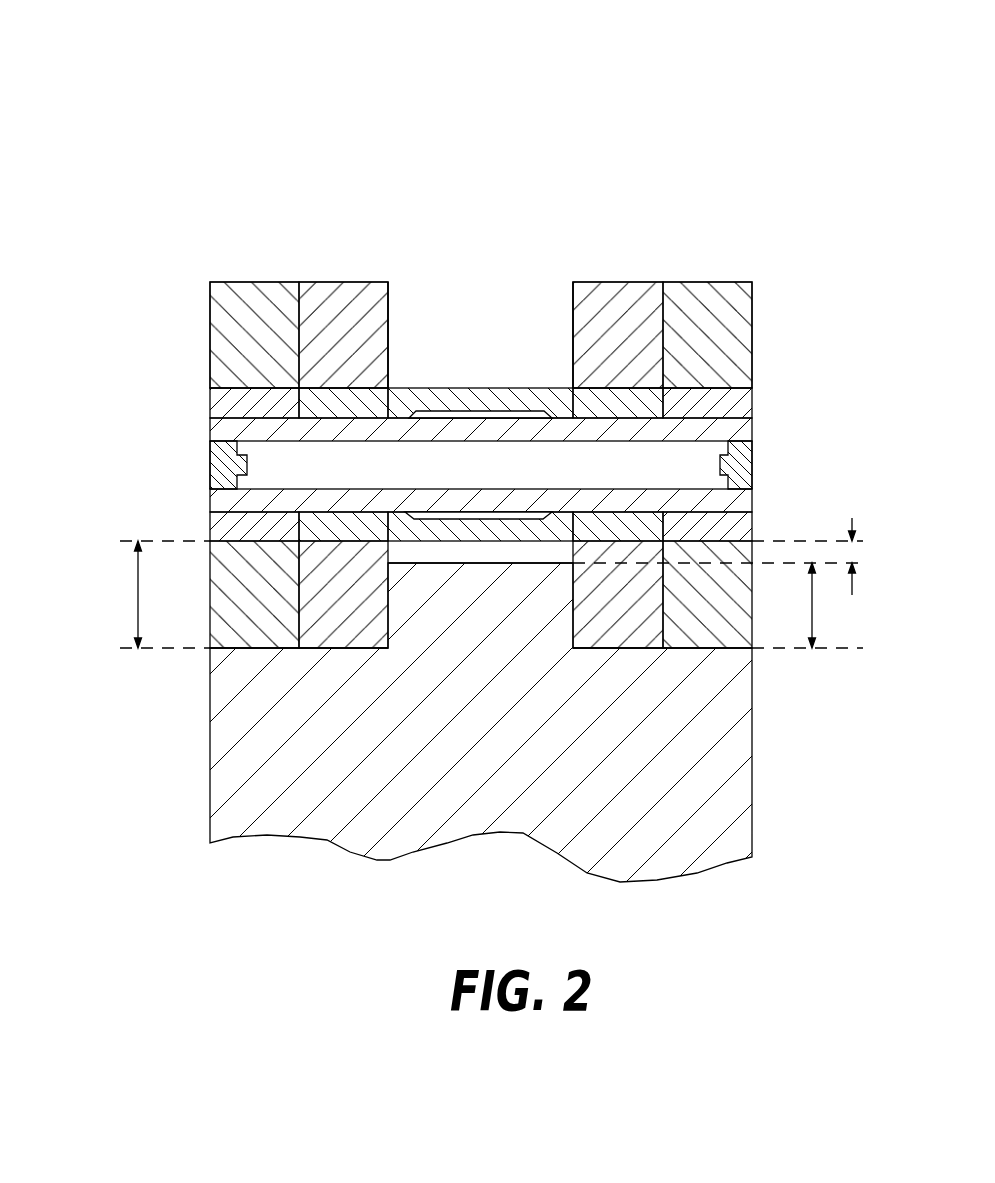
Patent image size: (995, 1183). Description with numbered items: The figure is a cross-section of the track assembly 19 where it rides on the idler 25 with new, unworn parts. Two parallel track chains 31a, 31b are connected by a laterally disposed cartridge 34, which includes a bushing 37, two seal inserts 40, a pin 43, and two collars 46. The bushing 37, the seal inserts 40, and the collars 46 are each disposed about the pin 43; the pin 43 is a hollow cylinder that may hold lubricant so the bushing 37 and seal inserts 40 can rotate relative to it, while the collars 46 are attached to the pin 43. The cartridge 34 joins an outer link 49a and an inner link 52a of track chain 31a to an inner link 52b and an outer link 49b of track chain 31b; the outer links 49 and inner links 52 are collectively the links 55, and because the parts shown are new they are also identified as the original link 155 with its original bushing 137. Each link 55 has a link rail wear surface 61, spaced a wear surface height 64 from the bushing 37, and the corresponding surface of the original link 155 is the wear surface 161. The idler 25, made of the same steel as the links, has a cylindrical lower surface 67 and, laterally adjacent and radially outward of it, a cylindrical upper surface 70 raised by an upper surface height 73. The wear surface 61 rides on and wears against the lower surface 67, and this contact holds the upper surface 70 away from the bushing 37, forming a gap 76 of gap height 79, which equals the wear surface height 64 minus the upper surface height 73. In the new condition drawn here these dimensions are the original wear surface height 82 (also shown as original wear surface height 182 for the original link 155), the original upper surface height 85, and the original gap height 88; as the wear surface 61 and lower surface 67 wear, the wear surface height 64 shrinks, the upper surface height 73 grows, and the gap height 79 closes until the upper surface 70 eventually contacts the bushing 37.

The track assembly 19 is at (849, 99).
The idler 25 is at (735, 828).
The track chain 31a is at (276, 238).
The track chain 31b is at (707, 240).
The cartridge 34 is at (187, 470).
The bushing 37 is at (480, 384).
The original bushing 137 is at (423, 397).
The seal insert 40 is at (382, 385).
The pin 43 is at (220, 430).
The collar 46 is at (220, 402).
The outer link 49 is at (477, 301).
The outer link 49a is at (216, 314).
The outer link 49b is at (783, 283).
The inner link 52 is at (477, 301).
The inner link 52a is at (370, 302).
The inner link 52b is at (587, 302).
The link 55 is at (477, 301).
The original link 155 is at (477, 301).
The link rail wear surface 61 is at (480, 657).
The link rail wear surface 161 is at (347, 648).
The wear surface height 64 is at (452, 637).
The original wear surface height 82 is at (452, 637).
The original wear surface height 182 is at (138, 541).
The lower surface 67 is at (230, 648).
The upper surface 70 is at (473, 567).
The upper surface height 73 is at (832, 609).
The original upper surface height 85 is at (815, 605).
The gap 76 is at (510, 553).
The gap height 79 is at (718, 533).
The original gap height 88 is at (852, 518).